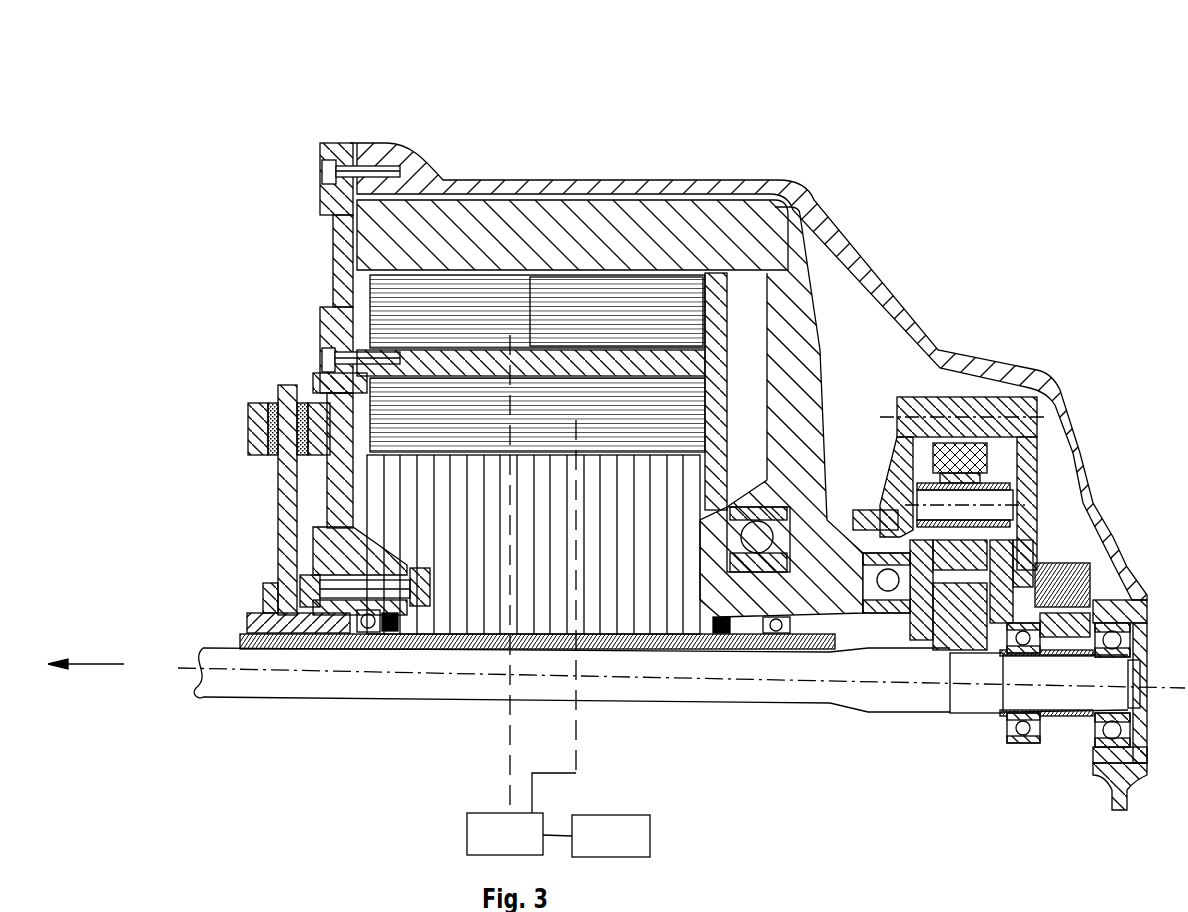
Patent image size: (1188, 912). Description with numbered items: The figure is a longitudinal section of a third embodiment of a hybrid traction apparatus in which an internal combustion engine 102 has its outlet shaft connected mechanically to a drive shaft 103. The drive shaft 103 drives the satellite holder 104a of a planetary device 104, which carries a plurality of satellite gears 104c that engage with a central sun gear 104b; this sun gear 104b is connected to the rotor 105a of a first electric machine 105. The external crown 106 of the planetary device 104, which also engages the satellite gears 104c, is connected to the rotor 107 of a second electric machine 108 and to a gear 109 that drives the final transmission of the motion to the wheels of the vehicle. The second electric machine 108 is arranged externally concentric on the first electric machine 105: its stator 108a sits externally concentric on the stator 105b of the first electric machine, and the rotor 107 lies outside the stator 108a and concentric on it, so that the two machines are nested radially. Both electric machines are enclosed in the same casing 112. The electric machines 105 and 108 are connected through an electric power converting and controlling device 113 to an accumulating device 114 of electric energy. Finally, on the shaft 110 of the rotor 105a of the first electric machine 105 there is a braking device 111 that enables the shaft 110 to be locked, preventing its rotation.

The internal combustion engine 102 is at (106, 670).
The drive shaft 103 is at (373, 655).
The planetary device 104 is at (880, 388).
The satellite holder 104a is at (1030, 478).
The central sun gear 104b is at (958, 600).
The satellite gears 104c is at (967, 450).
The first electric machine 105 is at (675, 494).
The rotor of the first electric machine 105a is at (533, 577).
The stator of the first electric machine 105b is at (353, 393).
The external crown 106 is at (966, 400).
The rotor of the second electric machine 107 is at (497, 215).
The second electric machine 108 is at (380, 302).
The stator of the second electric machine 108a is at (540, 303).
The gear 109 is at (1077, 567).
The shaft of the rotor of the first electric machine 110 is at (660, 645).
The braking device 111 is at (247, 440).
The casing 112 is at (630, 196).
The electric power converting and controlling device 113 is at (519, 834).
The accumulating device 114 is at (611, 836).